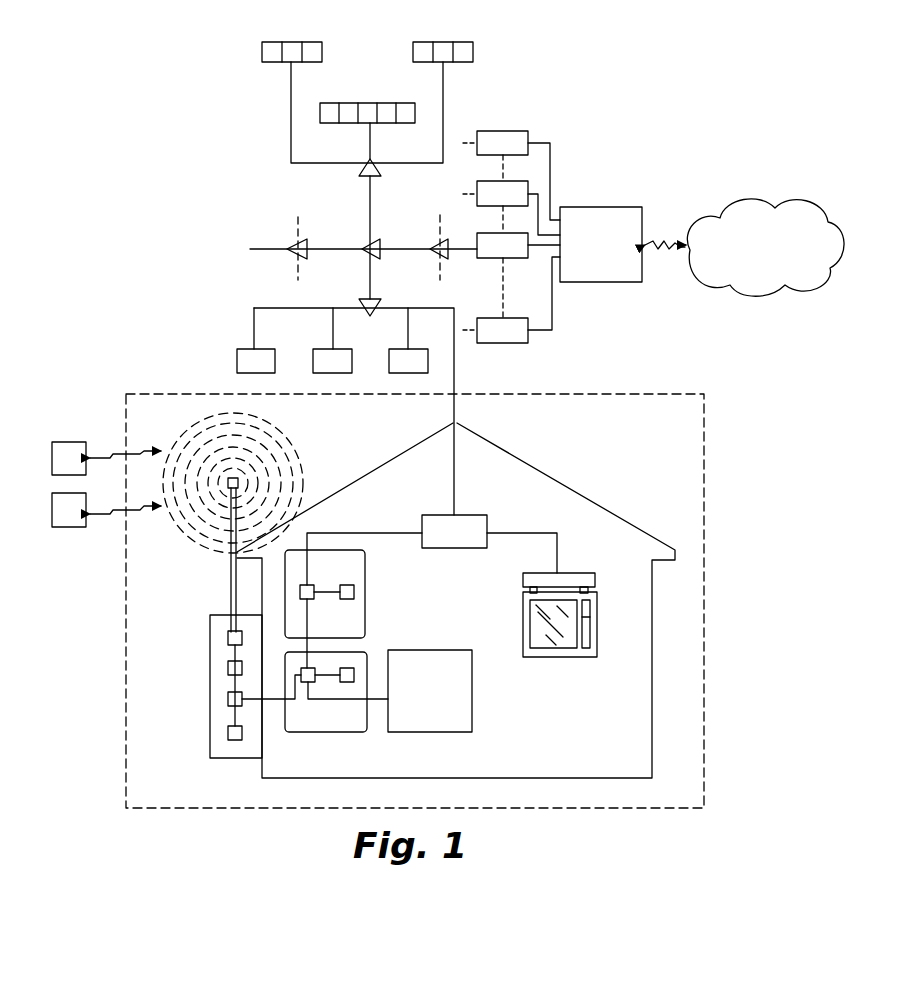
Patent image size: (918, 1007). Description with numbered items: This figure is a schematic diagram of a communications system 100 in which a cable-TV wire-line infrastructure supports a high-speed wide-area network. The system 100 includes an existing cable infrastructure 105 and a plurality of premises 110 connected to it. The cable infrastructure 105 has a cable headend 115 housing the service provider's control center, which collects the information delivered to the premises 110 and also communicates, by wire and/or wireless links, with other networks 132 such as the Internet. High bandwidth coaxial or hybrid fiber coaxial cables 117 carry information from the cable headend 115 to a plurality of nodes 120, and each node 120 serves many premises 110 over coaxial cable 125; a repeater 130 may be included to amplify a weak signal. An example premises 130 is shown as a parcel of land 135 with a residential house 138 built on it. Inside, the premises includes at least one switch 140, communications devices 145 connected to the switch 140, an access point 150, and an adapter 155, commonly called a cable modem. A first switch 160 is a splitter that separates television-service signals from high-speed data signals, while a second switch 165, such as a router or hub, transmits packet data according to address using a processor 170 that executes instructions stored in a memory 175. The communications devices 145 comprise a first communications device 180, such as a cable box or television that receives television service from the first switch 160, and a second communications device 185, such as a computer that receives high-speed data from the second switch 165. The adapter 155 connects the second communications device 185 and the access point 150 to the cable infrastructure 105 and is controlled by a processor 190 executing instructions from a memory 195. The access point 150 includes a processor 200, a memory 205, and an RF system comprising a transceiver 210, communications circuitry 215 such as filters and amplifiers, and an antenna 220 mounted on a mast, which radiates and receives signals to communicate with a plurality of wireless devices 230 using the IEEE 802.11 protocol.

The communications system 100 is at (213, 823).
The cable infrastructure 105 is at (553, 363).
The premises 110 is at (444, 50).
The cable headend 115 is at (630, 208).
The coaxial or hybrid fiber coaxial cables 117 is at (540, 203).
The node 120 is at (487, 157).
The coaxial cable 125 is at (389, 250).
The repeater / example premises 130 is at (366, 298).
The other networks 132 is at (775, 280).
The parcel of land 135 is at (704, 468).
The residential house 138 is at (653, 632).
The switch 140 is at (475, 515).
The communications device 145 is at (523, 613).
The access point 150 is at (210, 684).
The adapter 155 is at (365, 554).
The first switch 160 is at (454, 531).
The second switch 165 is at (326, 692).
The processor 170 is at (305, 668).
The memory 175 is at (351, 668).
The first communications device 180 is at (562, 657).
The second communications device 185 is at (430, 691).
The processor 190 is at (300, 592).
The memory 195 is at (354, 592).
The processor 200 is at (228, 699).
The memory 205 is at (228, 733).
The transceiver 210 is at (228, 638).
The communications circuitry 215 is at (228, 668).
The antenna 220 is at (238, 481).
The wireless devices 230 is at (77, 448).